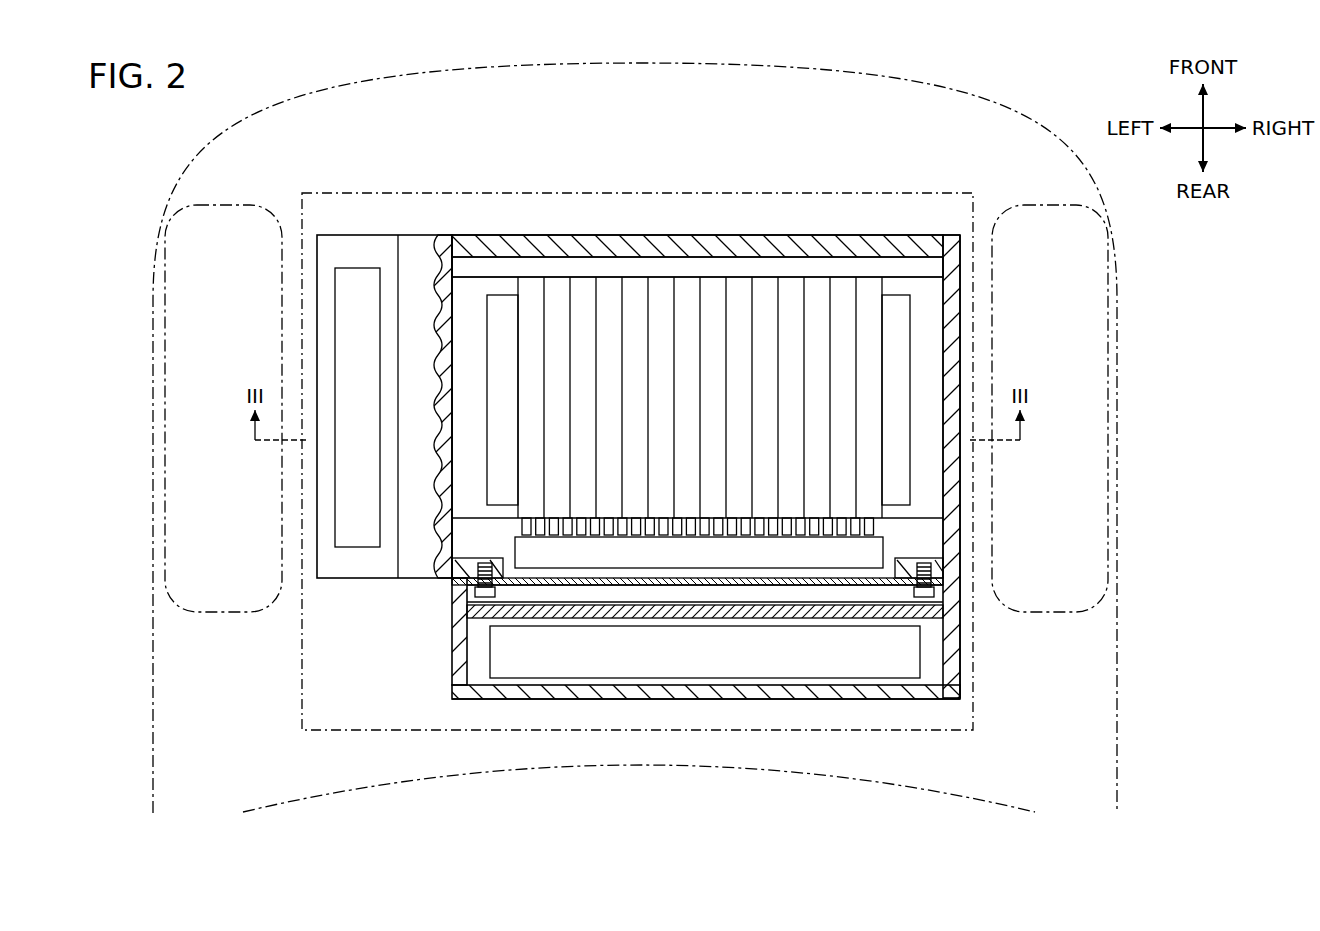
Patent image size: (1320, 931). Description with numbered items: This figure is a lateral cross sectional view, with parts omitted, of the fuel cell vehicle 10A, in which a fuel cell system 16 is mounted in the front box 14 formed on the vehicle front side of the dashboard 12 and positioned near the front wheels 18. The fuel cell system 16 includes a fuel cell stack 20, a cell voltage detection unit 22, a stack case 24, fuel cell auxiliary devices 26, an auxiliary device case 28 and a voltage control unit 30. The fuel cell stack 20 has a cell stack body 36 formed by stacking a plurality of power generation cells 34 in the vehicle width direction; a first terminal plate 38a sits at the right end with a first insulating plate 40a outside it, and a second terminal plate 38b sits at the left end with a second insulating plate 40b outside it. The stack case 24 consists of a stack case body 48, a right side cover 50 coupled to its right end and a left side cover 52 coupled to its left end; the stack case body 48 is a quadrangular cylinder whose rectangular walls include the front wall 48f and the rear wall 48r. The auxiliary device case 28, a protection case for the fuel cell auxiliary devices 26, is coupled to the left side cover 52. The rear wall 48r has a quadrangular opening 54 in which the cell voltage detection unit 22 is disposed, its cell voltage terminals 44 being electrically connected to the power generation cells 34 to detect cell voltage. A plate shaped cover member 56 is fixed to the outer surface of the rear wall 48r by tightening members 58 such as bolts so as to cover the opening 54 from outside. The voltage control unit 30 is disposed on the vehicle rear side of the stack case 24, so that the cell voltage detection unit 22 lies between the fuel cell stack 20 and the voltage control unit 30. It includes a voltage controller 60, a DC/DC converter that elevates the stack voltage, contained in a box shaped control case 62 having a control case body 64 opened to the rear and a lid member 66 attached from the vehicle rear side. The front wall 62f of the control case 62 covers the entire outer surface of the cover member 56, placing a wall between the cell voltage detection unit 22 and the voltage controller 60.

The fuel cell vehicle 10A is at (266, 90).
The dashboard 12 is at (430, 765).
The front box 14 is at (345, 192).
The fuel cell system 16 is at (553, 214).
The front wheels 18 is at (165, 312).
The fuel cell stack 20 is at (845, 275).
The cell voltage detection unit 22 is at (847, 575).
The stack case 24 is at (750, 233).
The fuel cell auxiliary devices 26 is at (335, 285).
The auxiliary device case 28 is at (370, 250).
The voltage control unit 30 is at (594, 706).
The power generation cells 34 is at (794, 288).
The cell stack body 36 is at (697, 333).
The first terminal plate 38a is at (910, 363).
The second terminal plate 38b is at (505, 293).
The first insulating plate 40a is at (930, 326).
The second insulating plate 40b is at (472, 283).
The cell voltage terminals 44 is at (740, 537).
The stack case body 48 is at (600, 243).
The front wall 48f is at (648, 248).
The rear wall 48r is at (905, 569).
The right side cover 50 is at (950, 282).
The left side cover 52 is at (415, 245).
The opening 54 is at (509, 566).
The cover member 56 is at (677, 588).
The tightening members 58 is at (478, 588).
The voltage controller 60 is at (815, 676).
The control case 62 is at (682, 676).
The front wall 62f is at (733, 612).
The control case body 64 is at (455, 633).
The lid member 66 is at (497, 698).